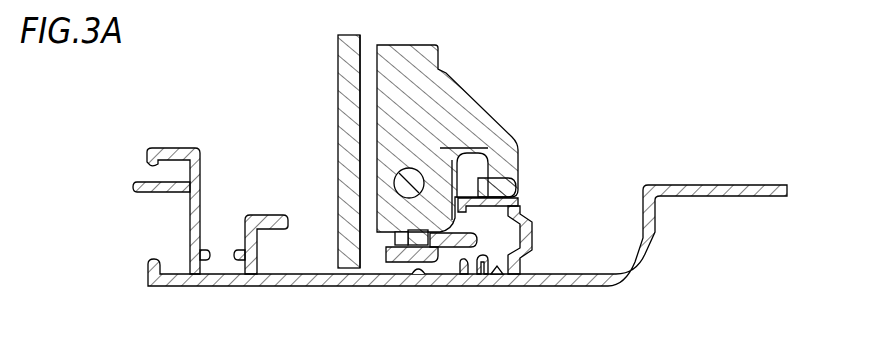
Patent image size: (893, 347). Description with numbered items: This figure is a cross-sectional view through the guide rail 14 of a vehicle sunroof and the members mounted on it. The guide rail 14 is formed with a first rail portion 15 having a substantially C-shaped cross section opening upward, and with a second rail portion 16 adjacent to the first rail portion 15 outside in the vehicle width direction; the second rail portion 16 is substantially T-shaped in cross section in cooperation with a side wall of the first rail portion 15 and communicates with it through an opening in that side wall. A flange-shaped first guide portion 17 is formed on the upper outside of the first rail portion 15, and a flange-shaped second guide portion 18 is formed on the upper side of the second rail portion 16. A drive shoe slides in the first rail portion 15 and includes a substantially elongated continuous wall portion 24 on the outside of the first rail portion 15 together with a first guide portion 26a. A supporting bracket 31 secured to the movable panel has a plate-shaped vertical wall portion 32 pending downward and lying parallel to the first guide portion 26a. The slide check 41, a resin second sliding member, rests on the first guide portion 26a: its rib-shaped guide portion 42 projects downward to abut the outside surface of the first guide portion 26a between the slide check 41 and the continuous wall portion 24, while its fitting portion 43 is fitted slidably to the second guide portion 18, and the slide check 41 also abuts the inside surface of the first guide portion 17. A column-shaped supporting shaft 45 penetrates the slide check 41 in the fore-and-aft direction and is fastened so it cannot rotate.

The guide rail 14 is at (655, 232).
The first rail portion 15 is at (418, 276).
The second rail portion 16 is at (497, 277).
The first guide portion 17 is at (519, 149).
The second guide portion 18 is at (514, 180).
The continuous wall portion 24 is at (470, 266).
The first guide portion 26a is at (395, 238).
The supporting bracket 31 is at (345, 95).
The vertical wall portion 32 is at (340, 56).
The slide check 41 is at (467, 103).
The guide portion 42 is at (400, 263).
The fitting portion 43 is at (521, 204).
The supporting shaft 45 is at (394, 176).